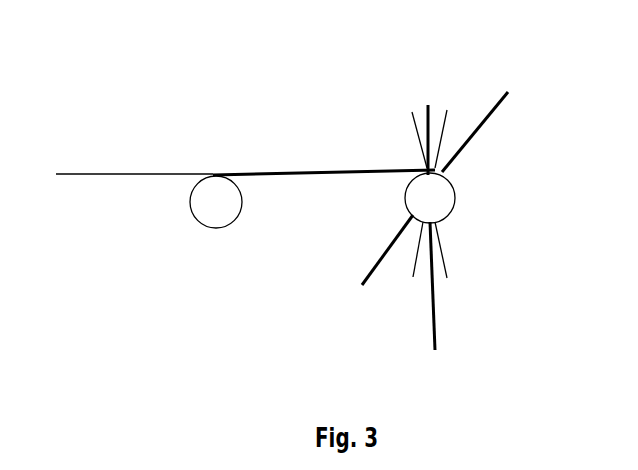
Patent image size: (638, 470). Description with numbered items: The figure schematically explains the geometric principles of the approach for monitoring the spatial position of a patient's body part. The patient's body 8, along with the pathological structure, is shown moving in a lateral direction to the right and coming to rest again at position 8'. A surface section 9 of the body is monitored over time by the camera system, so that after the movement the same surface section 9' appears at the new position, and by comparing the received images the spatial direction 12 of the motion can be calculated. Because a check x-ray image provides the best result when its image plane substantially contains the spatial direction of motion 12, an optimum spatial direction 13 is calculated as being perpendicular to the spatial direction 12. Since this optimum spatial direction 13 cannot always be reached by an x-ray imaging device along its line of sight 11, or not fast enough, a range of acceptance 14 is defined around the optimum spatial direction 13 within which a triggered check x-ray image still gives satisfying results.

The patient's body 8 is at (172, 237).
The position 8' is at (469, 224).
The surface section 9 is at (128, 230).
The surface section 9' is at (387, 107).
The line of sight 11 is at (340, 288).
The spatial direction 12 is at (310, 116).
The optimum spatial direction 13 is at (460, 319).
The range of acceptance 14 is at (500, 101).